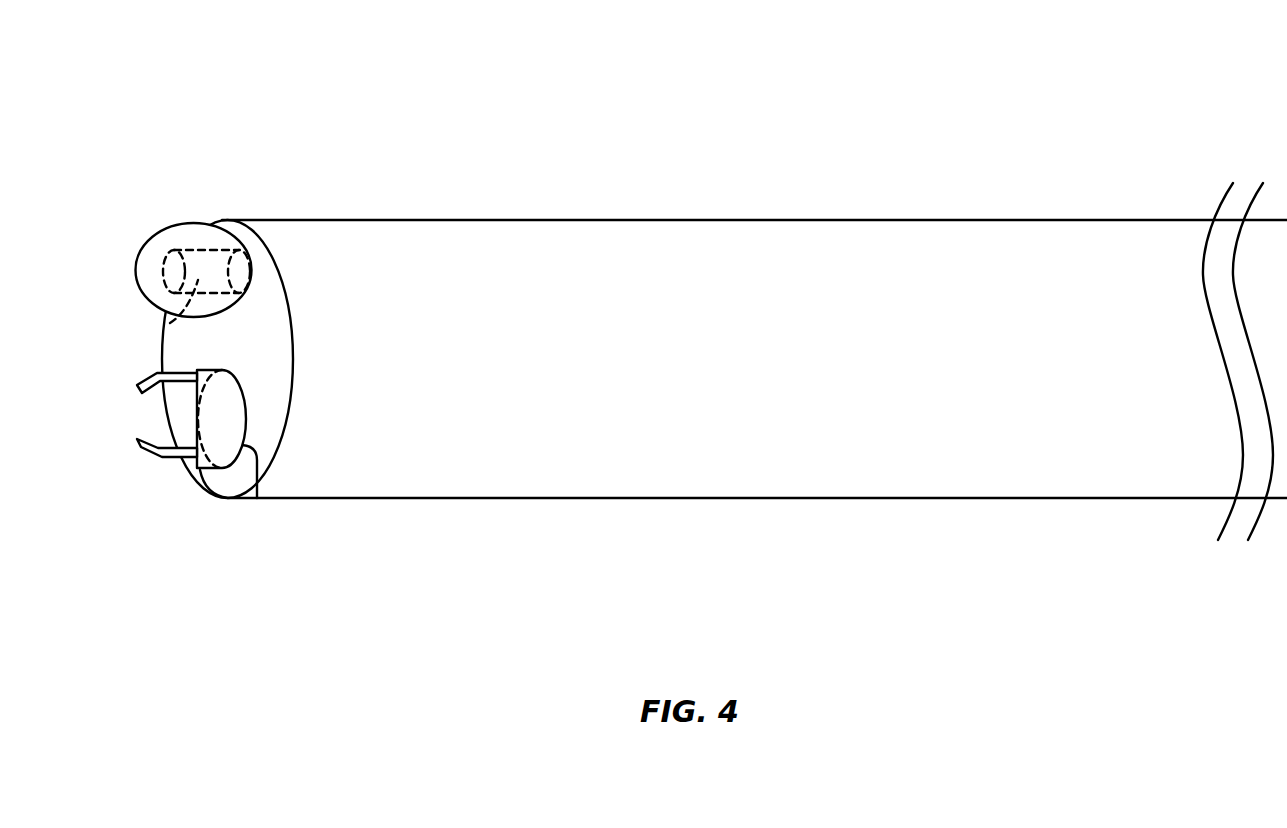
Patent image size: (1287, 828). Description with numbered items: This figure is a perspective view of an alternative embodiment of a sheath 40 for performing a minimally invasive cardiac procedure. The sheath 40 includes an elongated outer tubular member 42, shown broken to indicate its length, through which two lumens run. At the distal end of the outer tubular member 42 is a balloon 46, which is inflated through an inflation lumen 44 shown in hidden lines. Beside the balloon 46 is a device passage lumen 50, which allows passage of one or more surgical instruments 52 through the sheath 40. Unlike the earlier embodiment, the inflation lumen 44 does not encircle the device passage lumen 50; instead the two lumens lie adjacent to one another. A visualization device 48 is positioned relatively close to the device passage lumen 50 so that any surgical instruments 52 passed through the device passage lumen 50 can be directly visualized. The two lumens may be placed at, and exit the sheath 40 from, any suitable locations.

The sheath 40 is at (720, 75).
The outer tubular member 42 is at (512, 248).
The inflation lumen 44 is at (245, 268).
The balloon 46 is at (178, 224).
The visualization device 48 is at (170, 323).
The device passage lumen 50 is at (257, 497).
The surgical instruments 52 is at (205, 468).